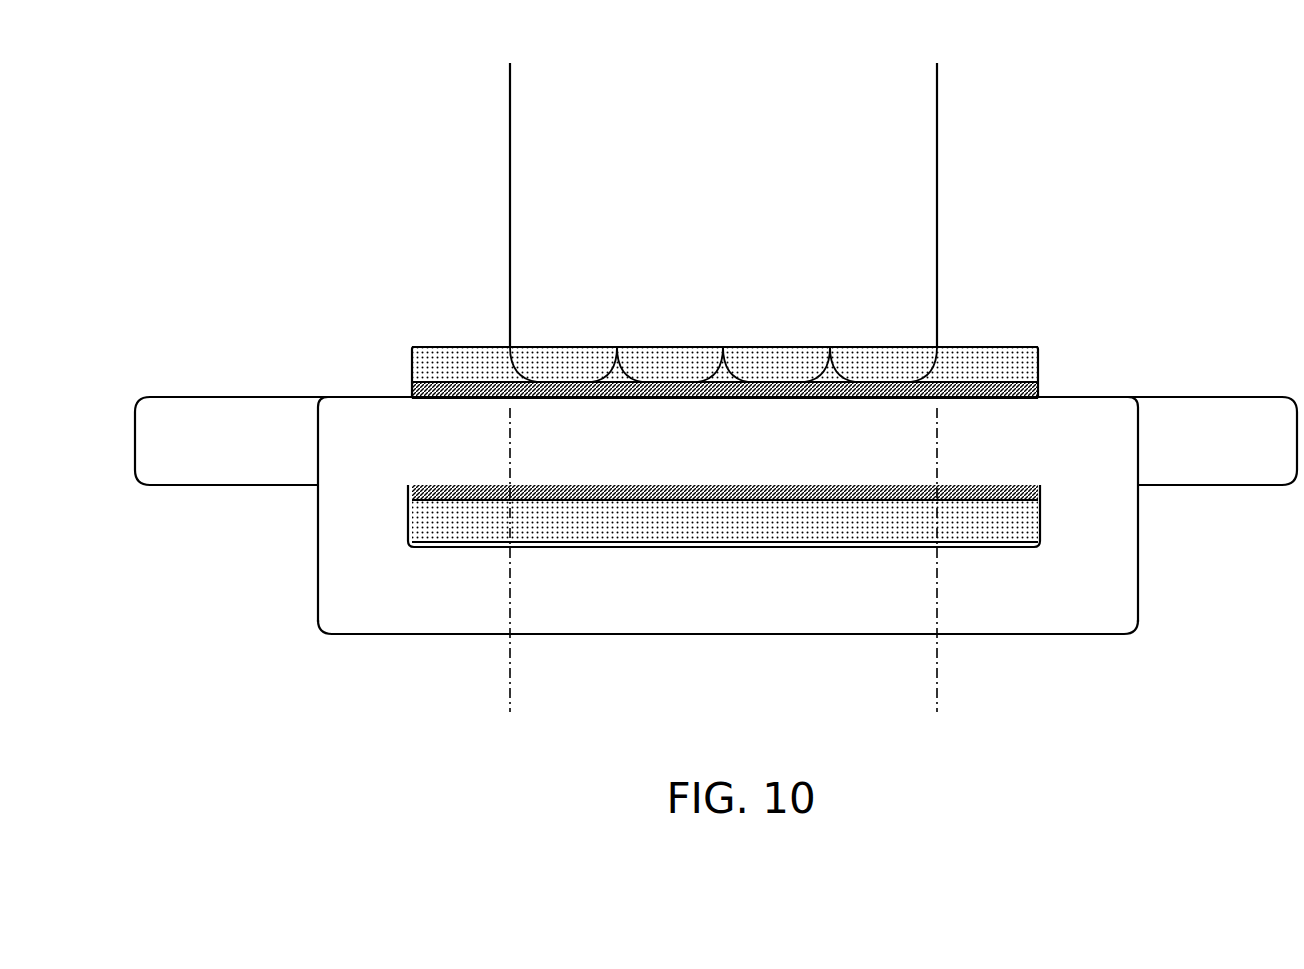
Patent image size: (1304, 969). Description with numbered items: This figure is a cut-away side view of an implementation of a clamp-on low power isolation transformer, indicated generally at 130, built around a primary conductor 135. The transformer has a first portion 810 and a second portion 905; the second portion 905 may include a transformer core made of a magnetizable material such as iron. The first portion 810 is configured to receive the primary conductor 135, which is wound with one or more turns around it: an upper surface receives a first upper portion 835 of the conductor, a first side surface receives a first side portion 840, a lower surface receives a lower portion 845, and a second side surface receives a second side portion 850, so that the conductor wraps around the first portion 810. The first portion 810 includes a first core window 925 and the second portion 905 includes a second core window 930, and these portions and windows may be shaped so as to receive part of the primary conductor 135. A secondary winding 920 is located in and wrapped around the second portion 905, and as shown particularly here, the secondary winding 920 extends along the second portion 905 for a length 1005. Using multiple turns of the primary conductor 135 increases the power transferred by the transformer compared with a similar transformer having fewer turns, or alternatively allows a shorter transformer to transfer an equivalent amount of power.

The sensor assembly 130 is at (103, 432).
The primary conductor 135 is at (203, 395).
The first upper portion 835 is at (407, 395).
The second portion 905 is at (1003, 348).
The second core window 930 is at (1038, 392).
The secondary winding 920 is at (937, 105).
The first side portion 840 is at (1138, 505).
The lower portion 845 is at (438, 635).
The second side portion 850 is at (317, 535).
The first core window 925 is at (1043, 500).
The first portion 810 is at (992, 528).
The length 1005 is at (927, 672).